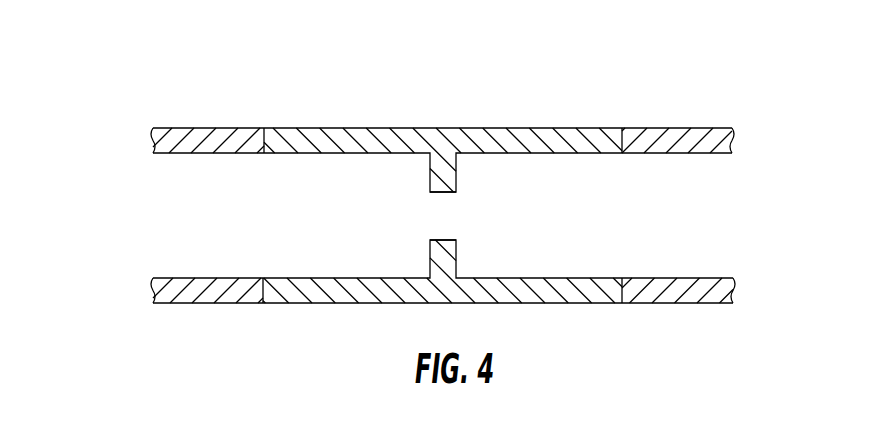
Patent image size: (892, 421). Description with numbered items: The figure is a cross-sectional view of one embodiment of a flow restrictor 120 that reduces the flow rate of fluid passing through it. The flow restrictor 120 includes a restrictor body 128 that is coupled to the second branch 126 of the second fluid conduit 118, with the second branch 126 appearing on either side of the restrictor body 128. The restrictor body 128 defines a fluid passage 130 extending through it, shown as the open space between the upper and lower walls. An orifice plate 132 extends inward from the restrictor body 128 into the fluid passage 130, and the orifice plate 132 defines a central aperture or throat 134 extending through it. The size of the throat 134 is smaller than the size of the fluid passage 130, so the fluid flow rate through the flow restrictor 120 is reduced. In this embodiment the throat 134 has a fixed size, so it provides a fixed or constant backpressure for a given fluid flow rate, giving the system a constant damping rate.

The flow restrictor 120 is at (126, 66).
The second fluid conduit 118 is at (226, 128).
The restrictor body 128 is at (358, 128).
The second branch 126 is at (698, 128).
The fluid passage 130 is at (553, 187).
The orifice plate 132 is at (456, 262).
The throat 134 is at (459, 226).